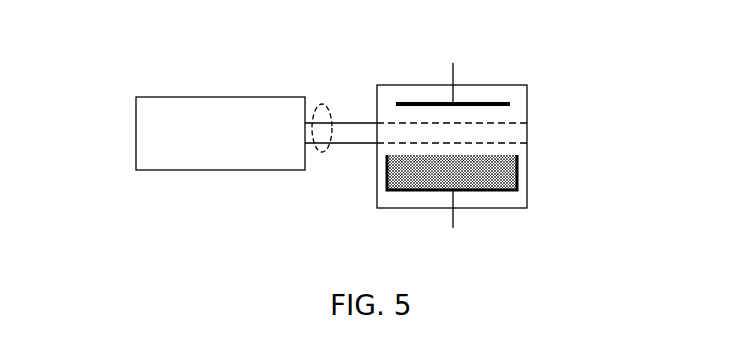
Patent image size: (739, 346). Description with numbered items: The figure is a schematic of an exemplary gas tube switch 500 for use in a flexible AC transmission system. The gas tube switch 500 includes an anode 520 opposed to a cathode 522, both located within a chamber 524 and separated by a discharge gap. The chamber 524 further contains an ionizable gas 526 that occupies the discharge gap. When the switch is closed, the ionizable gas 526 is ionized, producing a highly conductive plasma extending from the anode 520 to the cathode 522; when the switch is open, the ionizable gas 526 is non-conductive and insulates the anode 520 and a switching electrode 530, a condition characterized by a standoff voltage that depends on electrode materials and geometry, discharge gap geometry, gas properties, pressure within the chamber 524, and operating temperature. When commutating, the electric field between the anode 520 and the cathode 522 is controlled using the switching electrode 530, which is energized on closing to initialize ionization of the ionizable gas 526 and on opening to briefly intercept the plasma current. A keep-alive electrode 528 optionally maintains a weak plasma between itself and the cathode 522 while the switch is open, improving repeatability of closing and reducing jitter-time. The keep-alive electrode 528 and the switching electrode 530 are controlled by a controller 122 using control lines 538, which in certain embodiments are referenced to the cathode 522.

The gas tube switch 500 is at (199, 58).
The controller 122 is at (135, 130).
The control lines 538 is at (322, 153).
The chamber 524 is at (392, 203).
The switching electrode 530 is at (517, 123).
The keep-alive electrode 528 is at (517, 144).
The anode 520 is at (452, 65).
The cathode 522 is at (452, 224).
The ionizable gas 526 is at (485, 198).